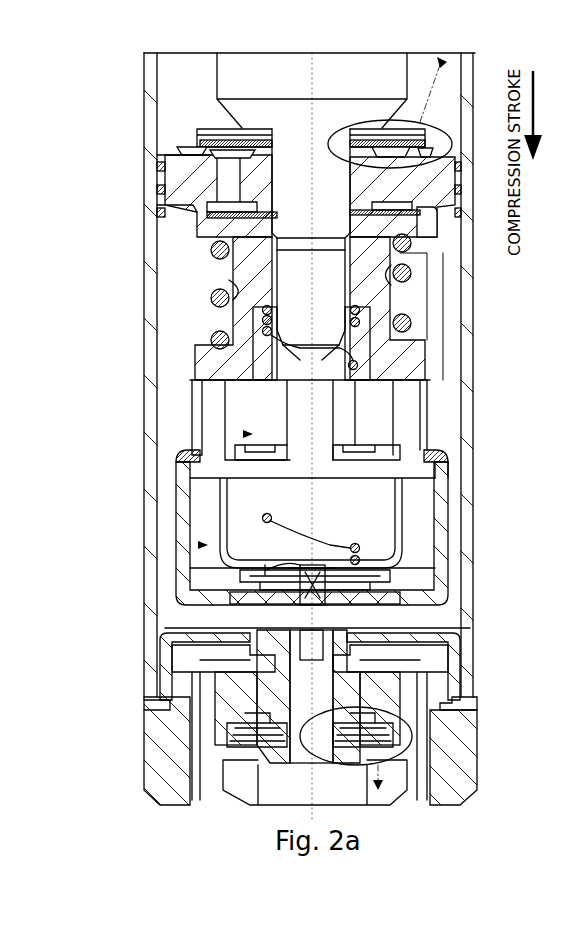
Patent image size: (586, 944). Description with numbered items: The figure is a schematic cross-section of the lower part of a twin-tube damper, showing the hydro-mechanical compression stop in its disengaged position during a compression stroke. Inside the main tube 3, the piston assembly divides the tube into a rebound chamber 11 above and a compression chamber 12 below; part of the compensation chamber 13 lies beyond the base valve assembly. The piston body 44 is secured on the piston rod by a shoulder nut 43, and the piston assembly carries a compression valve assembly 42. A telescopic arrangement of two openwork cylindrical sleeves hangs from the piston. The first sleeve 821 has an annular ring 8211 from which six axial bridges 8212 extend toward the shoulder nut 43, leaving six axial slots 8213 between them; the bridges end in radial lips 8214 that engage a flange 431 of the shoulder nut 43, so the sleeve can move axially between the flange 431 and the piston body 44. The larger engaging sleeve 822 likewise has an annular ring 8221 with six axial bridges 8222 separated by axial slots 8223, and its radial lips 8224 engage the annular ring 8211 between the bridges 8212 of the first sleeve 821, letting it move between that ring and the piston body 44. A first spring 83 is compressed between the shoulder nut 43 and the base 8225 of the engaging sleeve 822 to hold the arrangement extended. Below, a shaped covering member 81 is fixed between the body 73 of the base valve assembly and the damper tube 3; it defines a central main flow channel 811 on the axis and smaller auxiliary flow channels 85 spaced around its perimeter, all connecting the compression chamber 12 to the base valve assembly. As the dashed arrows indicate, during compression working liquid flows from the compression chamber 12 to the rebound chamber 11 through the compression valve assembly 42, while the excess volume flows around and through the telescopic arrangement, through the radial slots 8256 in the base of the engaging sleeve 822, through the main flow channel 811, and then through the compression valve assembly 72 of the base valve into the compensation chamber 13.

The rebound chamber 11 is at (183, 99).
The main tube 3 is at (150, 114).
The compression valve assembly 42 is at (200, 139).
The piston body 44 is at (210, 192).
The shoulder nut 43 is at (262, 287).
The compression chamber 12 is at (192, 292).
The radial lips 8214 is at (255, 352).
The flange 431 is at (215, 365).
The axial bridges 8212 is at (400, 437).
The axial slots 8213 is at (340, 440).
The first sleeve 821 is at (215, 437).
The radial lips 8224 is at (185, 457).
The annular ring 8211 is at (260, 483).
The axial bridges 8222 is at (377, 515).
The axial slots 8223 is at (417, 548).
The engaging sleeve 822 is at (200, 556).
The annular ring 8221 is at (300, 580).
The base 8225 is at (300, 603).
The radial slots 8256 is at (395, 583).
The first spring 83 is at (330, 490).
The covering member 81 is at (177, 643).
The main flow channel 811 is at (400, 655).
The auxiliary flow channels 85 is at (368, 638).
The compression valve assembly 72 is at (427, 727).
The body 73 is at (167, 734).
The compensation chamber 13 is at (215, 772).